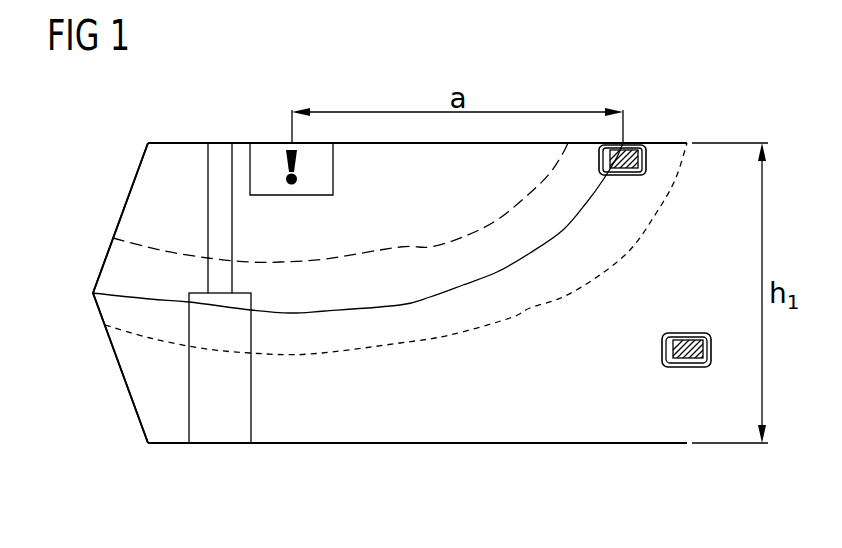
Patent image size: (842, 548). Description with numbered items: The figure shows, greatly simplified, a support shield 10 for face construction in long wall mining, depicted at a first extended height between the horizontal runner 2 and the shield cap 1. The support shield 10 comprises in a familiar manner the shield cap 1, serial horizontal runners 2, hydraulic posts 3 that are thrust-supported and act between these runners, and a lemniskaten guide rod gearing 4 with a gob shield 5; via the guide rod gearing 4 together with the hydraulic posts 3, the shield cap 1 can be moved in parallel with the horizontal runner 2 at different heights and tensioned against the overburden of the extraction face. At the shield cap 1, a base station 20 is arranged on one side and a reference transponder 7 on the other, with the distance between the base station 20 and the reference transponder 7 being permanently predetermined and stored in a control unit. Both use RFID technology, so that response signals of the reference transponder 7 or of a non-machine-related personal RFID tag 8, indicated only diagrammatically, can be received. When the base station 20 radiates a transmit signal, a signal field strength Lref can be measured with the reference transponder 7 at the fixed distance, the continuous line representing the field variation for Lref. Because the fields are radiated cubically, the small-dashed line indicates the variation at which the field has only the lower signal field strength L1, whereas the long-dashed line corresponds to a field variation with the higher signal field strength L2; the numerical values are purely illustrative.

The support shield 10 is at (112, 166).
The shield cap 1 is at (189, 143).
The horizontal runner 2 is at (362, 444).
The hydraulic post 3 is at (223, 430).
The lemniskaten guide rod gearing 4 is at (130, 393).
The gob shield 5 is at (123, 212).
The reference transponder 7 is at (621, 176).
The personal RFID tag 8 is at (687, 359).
The base station 20 is at (275, 186).
The signal field strength L2 is at (384, 256).
The reference signal field strength Lref is at (325, 313).
The signal field strength L1 is at (502, 326).